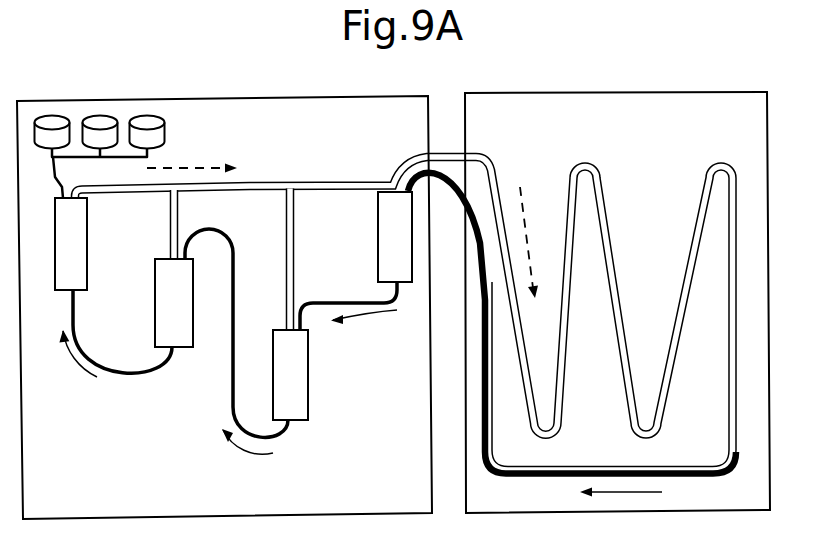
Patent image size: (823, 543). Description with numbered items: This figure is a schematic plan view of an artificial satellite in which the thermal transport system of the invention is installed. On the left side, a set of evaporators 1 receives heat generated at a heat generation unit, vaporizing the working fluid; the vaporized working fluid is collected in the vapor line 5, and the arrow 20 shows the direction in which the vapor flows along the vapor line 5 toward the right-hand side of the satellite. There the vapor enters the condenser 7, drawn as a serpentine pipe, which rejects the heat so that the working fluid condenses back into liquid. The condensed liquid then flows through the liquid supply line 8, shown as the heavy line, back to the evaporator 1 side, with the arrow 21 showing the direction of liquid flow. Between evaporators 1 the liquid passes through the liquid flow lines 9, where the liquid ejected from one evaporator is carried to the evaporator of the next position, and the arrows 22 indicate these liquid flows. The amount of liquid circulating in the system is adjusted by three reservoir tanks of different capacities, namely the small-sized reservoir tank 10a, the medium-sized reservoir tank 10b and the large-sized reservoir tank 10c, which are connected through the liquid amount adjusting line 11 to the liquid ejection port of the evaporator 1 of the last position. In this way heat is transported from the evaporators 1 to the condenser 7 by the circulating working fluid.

The evaporator 1 is at (378, 231).
The vapor line 5 is at (247, 182).
The condenser 7 is at (697, 211).
The liquid supply line 8 is at (443, 176).
The liquid flow line 9 is at (321, 302).
The small-sized reservoir tank 10a is at (57, 116).
The medium-sized reservoir tank 10b is at (104, 113).
The large-sized reservoir tank 10c is at (159, 113).
The liquid amount adjusting line 11 is at (56, 180).
The arrow showing direction of vapor flow 20 is at (190, 166).
The arrow showing direction of liquid flow 21 is at (637, 492).
The arrow indicating liquid flow 22 is at (62, 353).